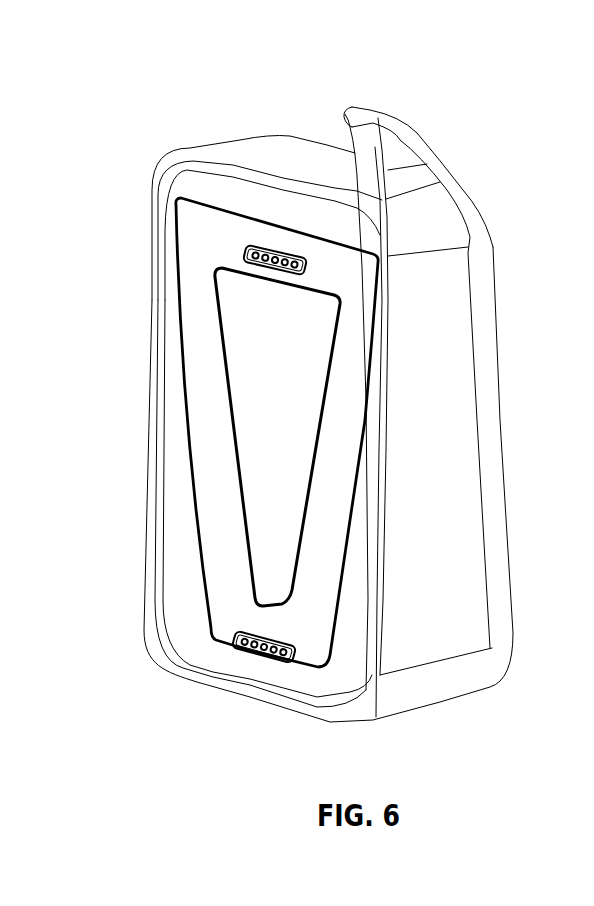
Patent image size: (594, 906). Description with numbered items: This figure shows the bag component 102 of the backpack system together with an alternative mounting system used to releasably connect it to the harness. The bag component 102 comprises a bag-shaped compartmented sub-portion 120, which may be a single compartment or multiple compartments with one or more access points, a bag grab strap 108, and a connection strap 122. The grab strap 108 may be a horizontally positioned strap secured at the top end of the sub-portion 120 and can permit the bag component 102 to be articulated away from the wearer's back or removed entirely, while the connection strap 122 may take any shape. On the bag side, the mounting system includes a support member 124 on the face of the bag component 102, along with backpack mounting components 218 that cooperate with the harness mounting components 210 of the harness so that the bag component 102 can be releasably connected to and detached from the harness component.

The bag component 102 is at (183, 110).
The bag grab strap 108 is at (400, 120).
The connection strap 122 is at (343, 122).
The bag-shaped compartmented sub-portion 120 is at (443, 343).
The support member 124 is at (323, 495).
The harness mounting components 210 is at (0, 393).
The backpack mounting components 218 is at (243, 631).